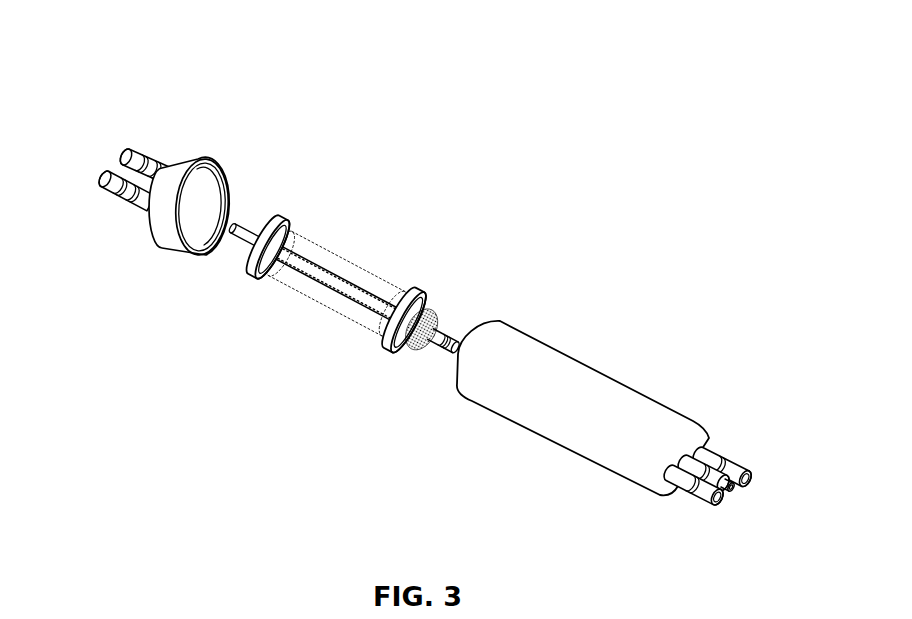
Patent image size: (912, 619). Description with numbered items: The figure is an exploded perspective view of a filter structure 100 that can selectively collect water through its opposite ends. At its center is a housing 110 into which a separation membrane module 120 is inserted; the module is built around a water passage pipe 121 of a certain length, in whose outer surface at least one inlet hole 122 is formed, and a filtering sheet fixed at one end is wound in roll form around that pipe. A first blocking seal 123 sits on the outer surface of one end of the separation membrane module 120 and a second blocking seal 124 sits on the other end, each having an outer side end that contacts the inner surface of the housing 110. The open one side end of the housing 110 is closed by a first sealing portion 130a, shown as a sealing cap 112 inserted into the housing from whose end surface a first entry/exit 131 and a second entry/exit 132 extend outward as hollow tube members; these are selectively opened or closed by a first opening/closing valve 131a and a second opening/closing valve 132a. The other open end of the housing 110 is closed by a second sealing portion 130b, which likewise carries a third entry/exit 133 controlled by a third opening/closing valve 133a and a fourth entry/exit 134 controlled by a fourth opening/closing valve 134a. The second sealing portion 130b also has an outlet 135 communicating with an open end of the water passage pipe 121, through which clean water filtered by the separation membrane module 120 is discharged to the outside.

The filter structure 100 is at (503, 158).
The housing 110 is at (588, 385).
The sealing cap 112 is at (203, 168).
The separation membrane module 120 is at (308, 237).
The water passage pipe 121 is at (372, 298).
The inlet hole 122 is at (350, 287).
The first blocking seal 123 is at (285, 213).
The second blocking seal 124 is at (427, 289).
The first sealing portion 130a is at (183, 80).
The second sealing portion 130b is at (745, 388).
The first entry/exit 131 is at (158, 160).
The first opening/closing valve 131a is at (137, 150).
The second entry/exit 132 is at (140, 203).
The second opening/closing valve 132a is at (112, 192).
The third entry/exit 133 is at (708, 450).
The third opening/closing valve 133a is at (735, 466).
The fourth entry/exit 134 is at (676, 482).
The fourth opening/closing valve 134a is at (701, 502).
The outlet 135 is at (737, 493).